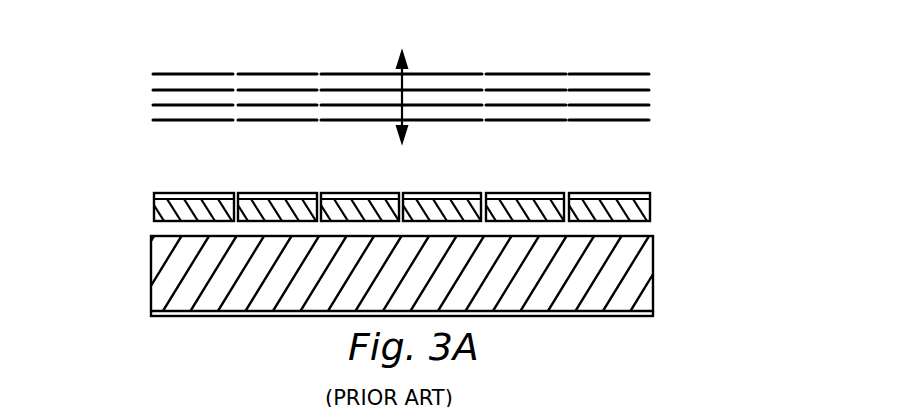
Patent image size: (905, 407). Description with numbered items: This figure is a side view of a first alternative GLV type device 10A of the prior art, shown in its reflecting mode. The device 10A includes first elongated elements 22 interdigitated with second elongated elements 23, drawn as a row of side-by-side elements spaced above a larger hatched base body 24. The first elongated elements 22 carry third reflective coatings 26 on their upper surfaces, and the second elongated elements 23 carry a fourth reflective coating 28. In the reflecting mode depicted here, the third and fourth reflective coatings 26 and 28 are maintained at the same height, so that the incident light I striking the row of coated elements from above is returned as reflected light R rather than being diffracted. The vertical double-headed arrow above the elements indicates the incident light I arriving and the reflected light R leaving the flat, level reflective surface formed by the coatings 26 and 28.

The first alternative GLV type device 10A is at (678, 70).
The first elongated elements 22 is at (365, 186).
The second elongated elements 23 is at (272, 222).
The substrate 24 is at (150, 282).
The third reflective coatings 26 is at (170, 193).
The fourth reflective coating 28 is at (296, 193).